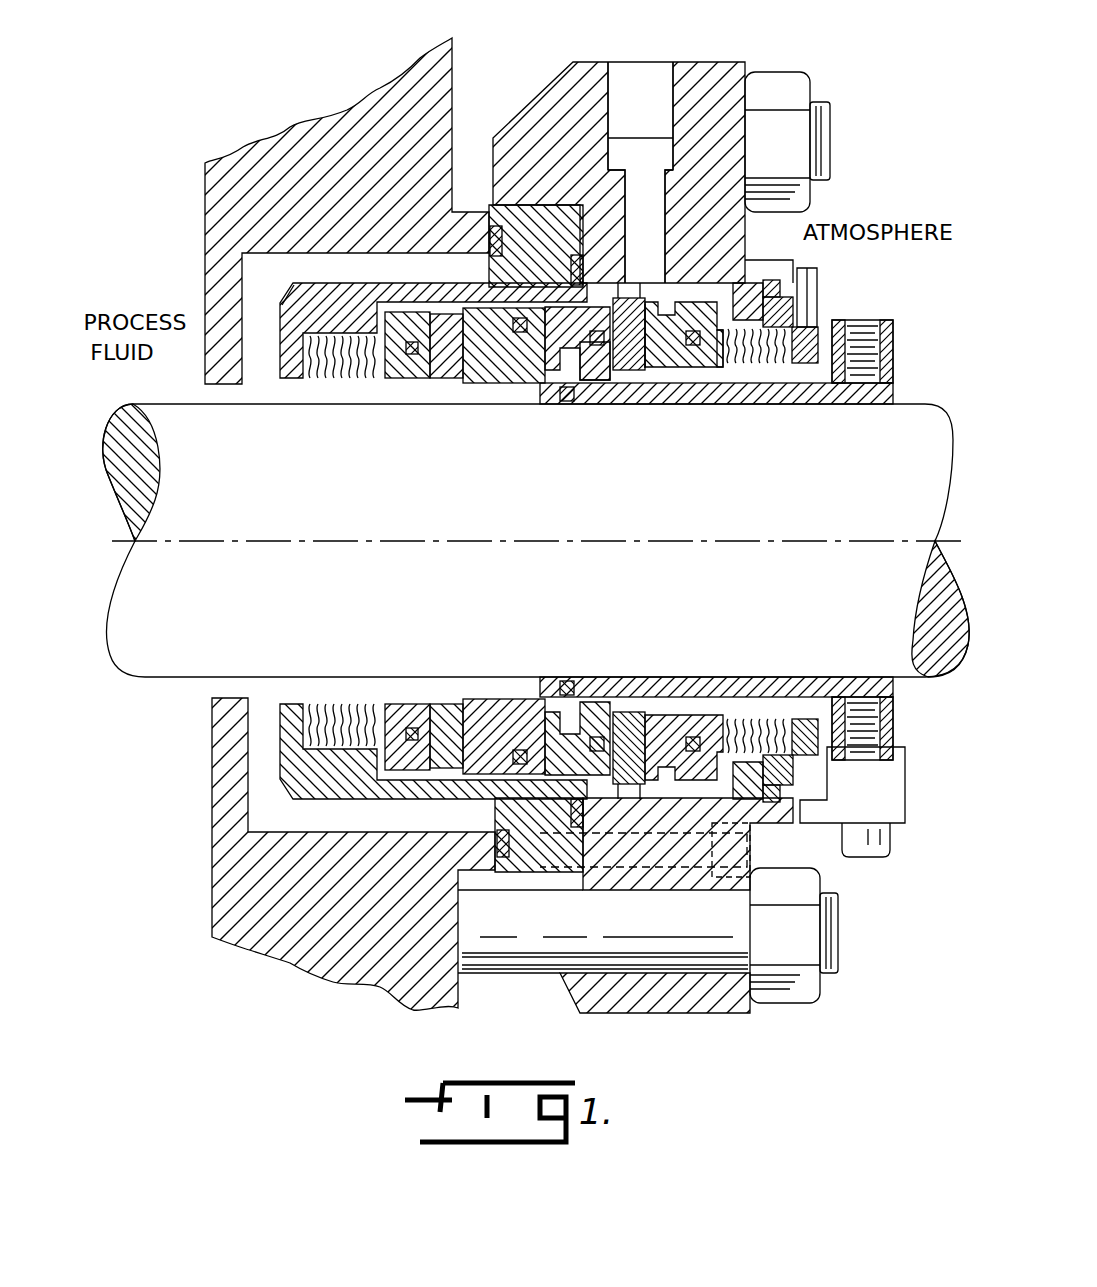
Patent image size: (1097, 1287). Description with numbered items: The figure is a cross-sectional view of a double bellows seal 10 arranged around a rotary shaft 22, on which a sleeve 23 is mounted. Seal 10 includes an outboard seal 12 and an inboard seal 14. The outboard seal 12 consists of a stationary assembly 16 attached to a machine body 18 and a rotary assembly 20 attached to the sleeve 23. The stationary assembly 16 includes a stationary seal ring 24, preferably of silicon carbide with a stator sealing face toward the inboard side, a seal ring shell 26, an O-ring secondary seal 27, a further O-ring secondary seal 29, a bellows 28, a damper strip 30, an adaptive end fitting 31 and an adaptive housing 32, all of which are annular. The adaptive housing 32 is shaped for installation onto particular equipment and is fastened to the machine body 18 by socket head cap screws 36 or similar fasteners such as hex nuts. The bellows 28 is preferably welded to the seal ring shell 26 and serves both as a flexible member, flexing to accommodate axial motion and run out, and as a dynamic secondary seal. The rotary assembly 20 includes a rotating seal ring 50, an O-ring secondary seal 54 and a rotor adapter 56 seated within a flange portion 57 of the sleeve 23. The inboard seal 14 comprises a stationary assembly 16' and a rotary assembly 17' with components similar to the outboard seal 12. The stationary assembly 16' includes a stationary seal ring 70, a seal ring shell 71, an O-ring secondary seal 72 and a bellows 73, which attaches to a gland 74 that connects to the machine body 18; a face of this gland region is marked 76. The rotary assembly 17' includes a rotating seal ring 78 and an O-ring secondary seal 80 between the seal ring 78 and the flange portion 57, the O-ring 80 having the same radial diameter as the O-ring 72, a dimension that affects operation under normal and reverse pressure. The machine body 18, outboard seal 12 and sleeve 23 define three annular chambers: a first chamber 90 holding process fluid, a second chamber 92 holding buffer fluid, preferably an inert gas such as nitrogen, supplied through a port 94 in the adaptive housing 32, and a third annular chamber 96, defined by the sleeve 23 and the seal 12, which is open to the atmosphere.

The double seal 10 is at (892, 166).
The outboard seal 12 is at (731, 666).
The inboard seal 14 is at (411, 684).
The stationary assembly 16 is at (740, 406).
The stationary assembly 16' is at (362, 434).
The rotary assembly 17' is at (533, 435).
The machine body 18 is at (341, 117).
The rotary assembly 20 is at (642, 373).
The rotary shaft 22 is at (188, 673).
The sleeve 23 is at (816, 402).
The stationary seal ring 24 is at (665, 700).
The seal ring shell 26 is at (722, 370).
The O-ring secondary seal 27 is at (696, 705).
The bellows 28 is at (766, 366).
The O-ring secondary seal 29 is at (783, 291).
The damper strip 30 is at (800, 318).
The adaptive end fitting 31 is at (863, 322).
The adaptive housing 32 is at (726, 70).
The socket head cap screws 36 is at (800, 76).
The rotating seal ring 50 is at (647, 352).
The O-ring secondary seal 54 is at (598, 347).
The rotor adapter 56 is at (628, 297).
The flange portion 57 is at (586, 372).
The stationary seal ring 70 is at (451, 700).
The seal ring shell 71 is at (406, 318).
The O-ring secondary seal 72 is at (410, 381).
The bellows 73 is at (331, 386).
The gland 74 is at (290, 306).
The holder face 76 is at (303, 306).
The rotating seal ring 78 is at (521, 696).
The O-ring secondary seal 80 is at (502, 372).
The first chamber 90 is at (348, 690).
The second chamber 92 is at (726, 791).
The port 94 is at (651, 76).
The third annular chamber 96 is at (796, 700).